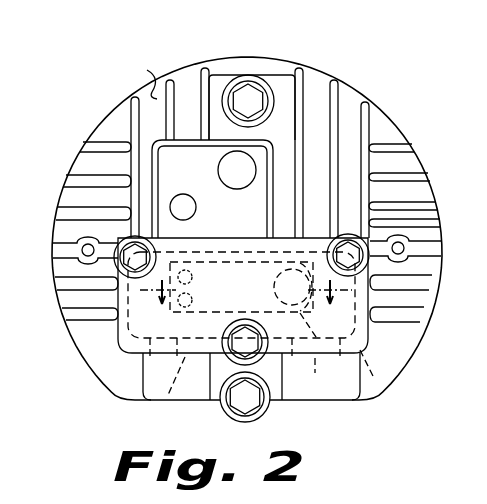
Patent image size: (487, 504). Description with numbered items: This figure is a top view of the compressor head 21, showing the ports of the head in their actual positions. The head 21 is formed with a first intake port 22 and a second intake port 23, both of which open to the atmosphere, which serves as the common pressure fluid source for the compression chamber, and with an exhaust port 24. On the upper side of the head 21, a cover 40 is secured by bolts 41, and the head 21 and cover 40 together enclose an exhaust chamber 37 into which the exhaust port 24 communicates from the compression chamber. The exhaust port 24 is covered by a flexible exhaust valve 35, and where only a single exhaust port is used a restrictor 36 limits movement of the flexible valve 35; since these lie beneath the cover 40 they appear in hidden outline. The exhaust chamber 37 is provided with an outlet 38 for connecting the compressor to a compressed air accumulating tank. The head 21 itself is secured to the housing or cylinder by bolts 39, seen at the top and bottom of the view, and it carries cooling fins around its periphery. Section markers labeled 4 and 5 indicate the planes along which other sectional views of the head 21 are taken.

The section line 4- 4 is at (243, 300).
The section line 5- 5 is at (145, 80).
The head 21 is at (74, 314).
The first intake port 22 is at (195, 210).
The second intake port 23 is at (225, 172).
The exhaust port 24 is at (275, 288).
The flexible exhaust valve 35 is at (284, 354).
The restrictor 36 is at (245, 342).
The exhaust chamber 37 is at (395, 343).
The outlet 38 is at (392, 392).
The bolts 39 is at (258, 96).
The cover 40 is at (125, 352).
The bolts 41 is at (132, 262).